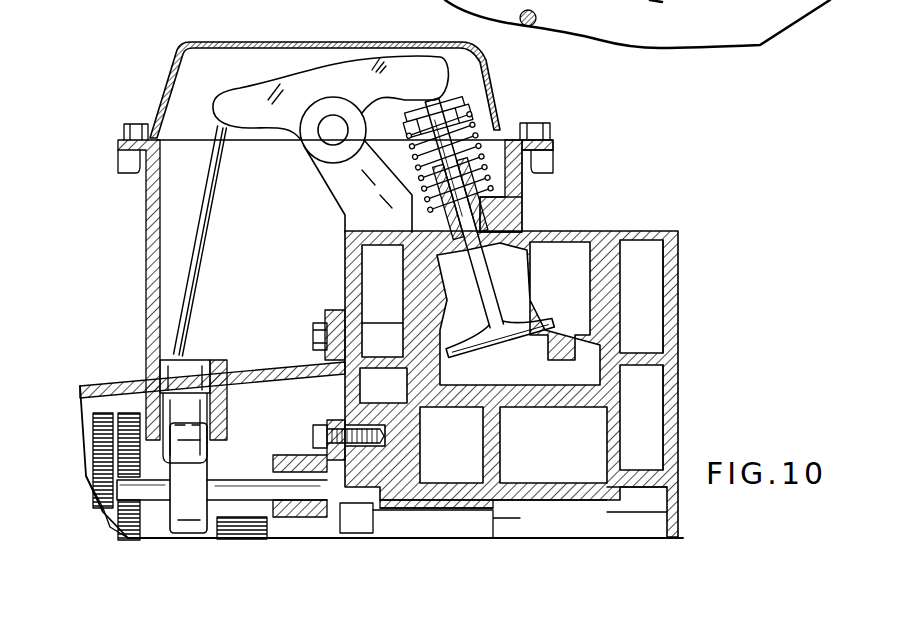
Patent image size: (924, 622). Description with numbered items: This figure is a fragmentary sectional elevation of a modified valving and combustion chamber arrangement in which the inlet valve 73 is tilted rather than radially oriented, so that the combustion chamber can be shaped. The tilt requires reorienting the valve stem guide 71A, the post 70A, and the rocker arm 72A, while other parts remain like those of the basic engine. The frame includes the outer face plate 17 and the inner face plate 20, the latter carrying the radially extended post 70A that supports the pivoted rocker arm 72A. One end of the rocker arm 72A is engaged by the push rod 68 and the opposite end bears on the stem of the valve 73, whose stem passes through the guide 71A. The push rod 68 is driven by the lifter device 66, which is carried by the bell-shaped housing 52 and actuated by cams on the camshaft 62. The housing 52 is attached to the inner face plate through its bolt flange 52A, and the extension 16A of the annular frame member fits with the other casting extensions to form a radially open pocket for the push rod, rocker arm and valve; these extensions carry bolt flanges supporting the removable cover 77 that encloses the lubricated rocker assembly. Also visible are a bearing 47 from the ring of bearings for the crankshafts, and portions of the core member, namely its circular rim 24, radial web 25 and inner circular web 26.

The cover 77 is at (177, 70).
The rocker arm 72A is at (248, 82).
The valve stem guide 71A is at (490, 125).
The extension of annular member 16A is at (523, 194).
The bolt flange 52A is at (143, 223).
The post 70A is at (333, 175).
The push rod 68 is at (220, 233).
The inner face plate 20 is at (343, 278).
The outer face plate 17 is at (678, 288).
The inlet valve 73 is at (517, 338).
The radial web 25 is at (480, 450).
The circular rim 24 is at (540, 403).
The inner circular web 26 is at (548, 506).
The bell-shaped housing 52 is at (103, 385).
The lifter device 66 is at (187, 424).
The camshaft 62 is at (228, 481).
The bearing 47 is at (290, 458).